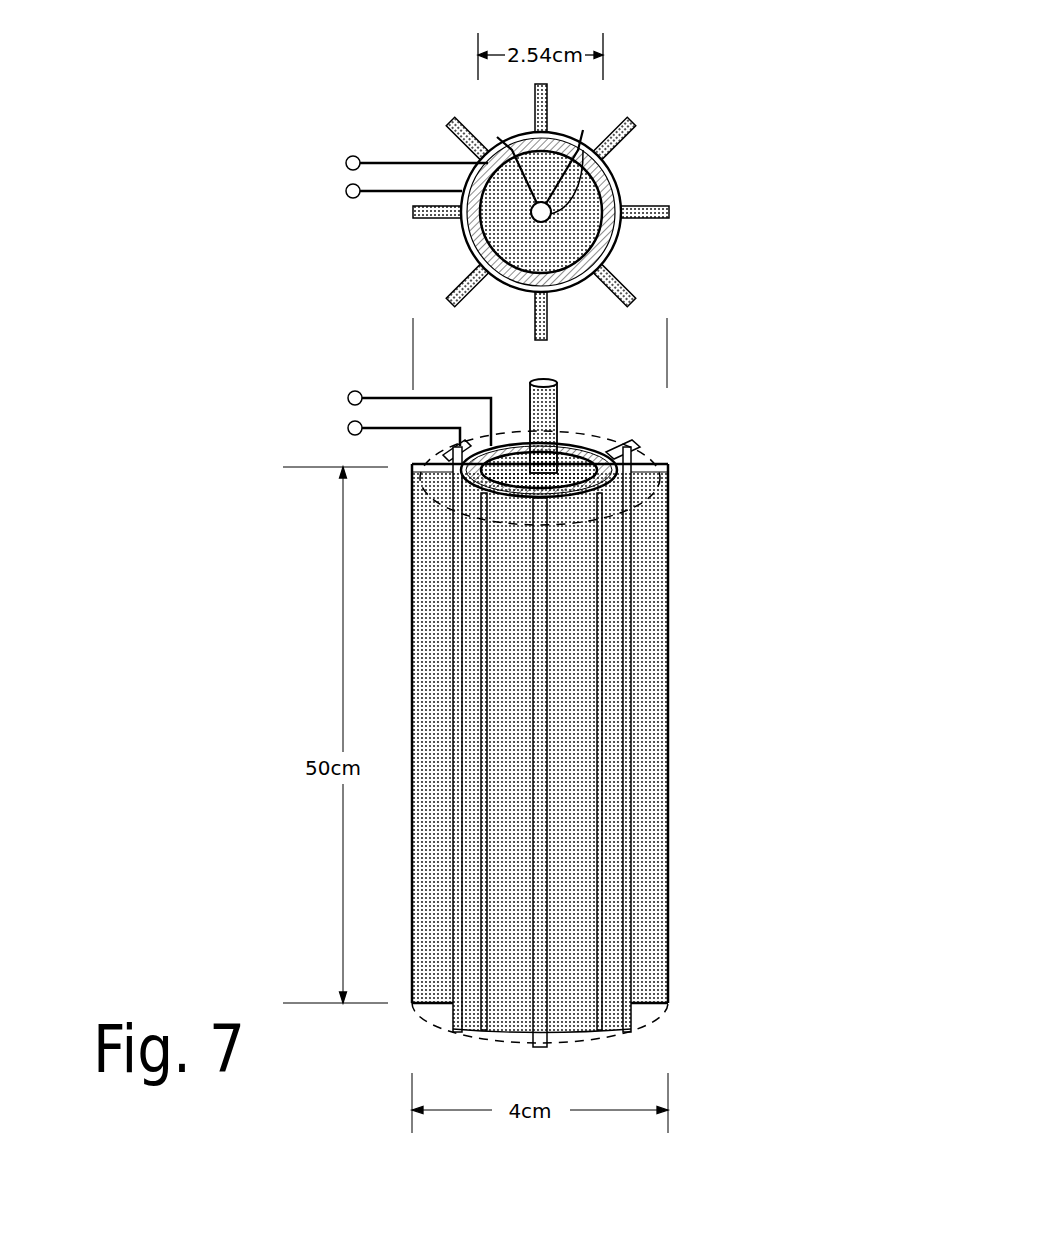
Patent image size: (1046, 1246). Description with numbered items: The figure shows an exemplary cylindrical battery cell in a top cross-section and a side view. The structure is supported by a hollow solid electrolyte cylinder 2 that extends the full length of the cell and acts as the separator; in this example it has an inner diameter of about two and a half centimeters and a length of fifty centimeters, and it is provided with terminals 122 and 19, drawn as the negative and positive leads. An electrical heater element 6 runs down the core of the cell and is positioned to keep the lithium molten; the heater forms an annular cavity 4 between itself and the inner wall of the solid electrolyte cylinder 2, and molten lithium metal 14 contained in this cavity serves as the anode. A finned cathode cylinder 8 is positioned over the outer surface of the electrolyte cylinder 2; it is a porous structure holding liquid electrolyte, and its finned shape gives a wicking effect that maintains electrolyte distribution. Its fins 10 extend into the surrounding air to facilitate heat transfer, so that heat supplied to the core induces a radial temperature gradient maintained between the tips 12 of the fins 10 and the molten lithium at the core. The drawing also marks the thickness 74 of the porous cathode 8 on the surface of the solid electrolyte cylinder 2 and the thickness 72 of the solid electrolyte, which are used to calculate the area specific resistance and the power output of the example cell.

The solid electrolyte cylinder 2 is at (607, 234).
The annular cavity 4 is at (500, 242).
The electrical heater element 6 is at (550, 207).
The finned cathode cylinder 8 is at (569, 291).
The fins 10 is at (647, 778).
The fin tips 12 is at (667, 860).
The molten lithium metal 14 is at (572, 1010).
The terminal 19 is at (353, 198).
The terminal 122 is at (354, 155).
The thickness of the solid electrolyte 72 is at (583, 130).
The thickness of the porous cathode 74 is at (497, 137).